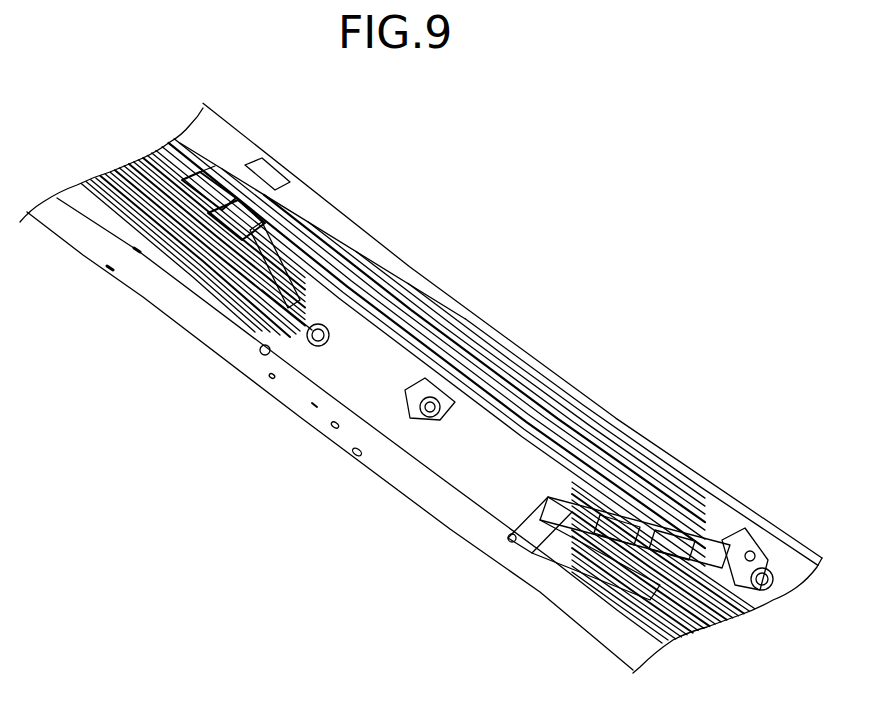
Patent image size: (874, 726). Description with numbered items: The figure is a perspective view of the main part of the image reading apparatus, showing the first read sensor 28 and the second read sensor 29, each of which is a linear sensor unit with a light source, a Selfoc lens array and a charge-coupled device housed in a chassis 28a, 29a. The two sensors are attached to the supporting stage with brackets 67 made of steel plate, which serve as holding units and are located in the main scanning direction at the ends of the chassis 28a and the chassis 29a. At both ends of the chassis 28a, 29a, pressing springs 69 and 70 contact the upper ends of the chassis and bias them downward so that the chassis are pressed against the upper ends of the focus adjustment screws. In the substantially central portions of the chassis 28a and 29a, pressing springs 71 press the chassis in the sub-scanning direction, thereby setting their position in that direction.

The first read sensor 28 is at (136, 252).
The chassis of the first read sensor 28a is at (157, 177).
The second read sensor 29 is at (522, 355).
The chassis of the second read sensor 29a is at (512, 430).
The bracket 67 is at (282, 356).
The pressing spring 69 is at (266, 172).
The pressing spring 70 is at (302, 315).
The pressing spring 71 is at (430, 387).